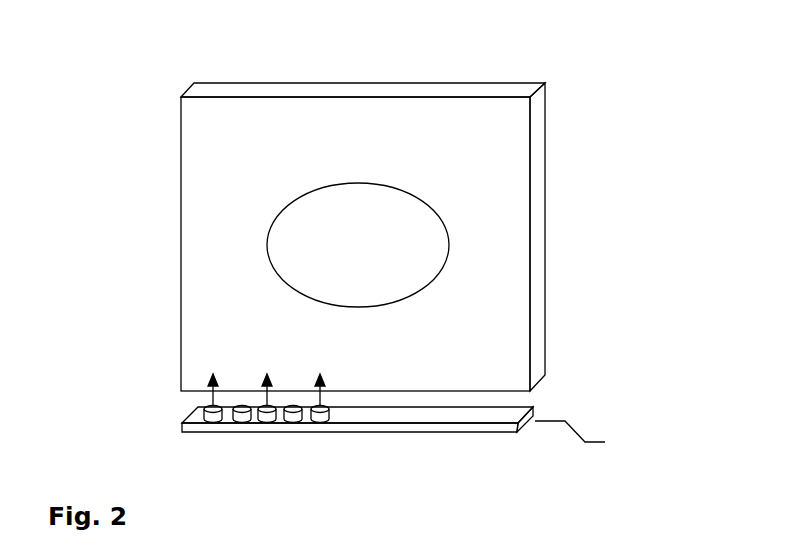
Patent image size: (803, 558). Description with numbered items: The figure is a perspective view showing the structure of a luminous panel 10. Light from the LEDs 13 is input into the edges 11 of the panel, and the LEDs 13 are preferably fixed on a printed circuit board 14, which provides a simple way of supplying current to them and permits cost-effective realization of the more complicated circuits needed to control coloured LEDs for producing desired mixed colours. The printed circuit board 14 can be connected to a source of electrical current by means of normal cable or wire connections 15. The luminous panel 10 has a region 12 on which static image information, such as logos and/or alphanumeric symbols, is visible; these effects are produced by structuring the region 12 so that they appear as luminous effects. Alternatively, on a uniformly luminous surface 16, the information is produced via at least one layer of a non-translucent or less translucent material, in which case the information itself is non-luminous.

The luminous panel 10 is at (520, 72).
The edges 11 is at (537, 147).
The region 12 is at (315, 208).
The LEDs 13 is at (202, 410).
The printed circuit board 14 is at (408, 412).
The wire connections 15 is at (578, 423).
The uniformly luminous surface 16 is at (475, 288).